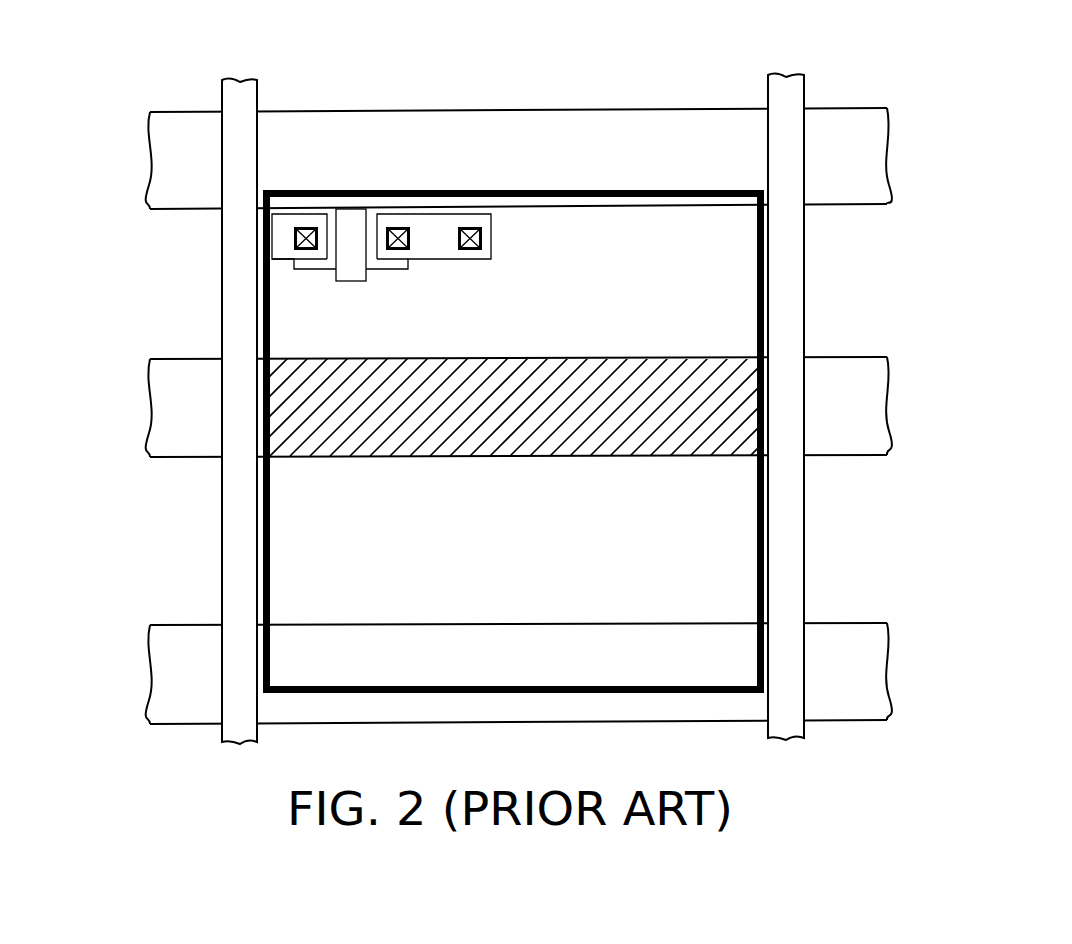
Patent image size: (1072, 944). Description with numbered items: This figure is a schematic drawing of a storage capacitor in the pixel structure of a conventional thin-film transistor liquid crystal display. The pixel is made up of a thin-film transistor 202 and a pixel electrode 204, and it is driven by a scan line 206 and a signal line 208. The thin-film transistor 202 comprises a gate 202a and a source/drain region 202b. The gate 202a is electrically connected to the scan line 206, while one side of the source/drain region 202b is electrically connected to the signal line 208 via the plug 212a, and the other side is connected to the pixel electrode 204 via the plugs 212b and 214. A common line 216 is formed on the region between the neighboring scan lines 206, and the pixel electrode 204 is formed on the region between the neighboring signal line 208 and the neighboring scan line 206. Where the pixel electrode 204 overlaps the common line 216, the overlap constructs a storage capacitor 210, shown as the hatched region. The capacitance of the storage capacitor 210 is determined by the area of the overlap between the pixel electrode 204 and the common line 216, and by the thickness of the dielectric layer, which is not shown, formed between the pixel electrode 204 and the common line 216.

The thin-film transistor 202 is at (295, 154).
The gate 202a is at (353, 220).
The source/drain region 202b is at (325, 213).
The pixel electrode 204 is at (296, 328).
The scan line 206 is at (843, 123).
The signal line 208 is at (235, 93).
The storage capacitor 210 is at (720, 440).
The plug 212a is at (310, 233).
The plug 212b is at (403, 233).
The plug 214 is at (477, 230).
The common line 216 is at (867, 412).